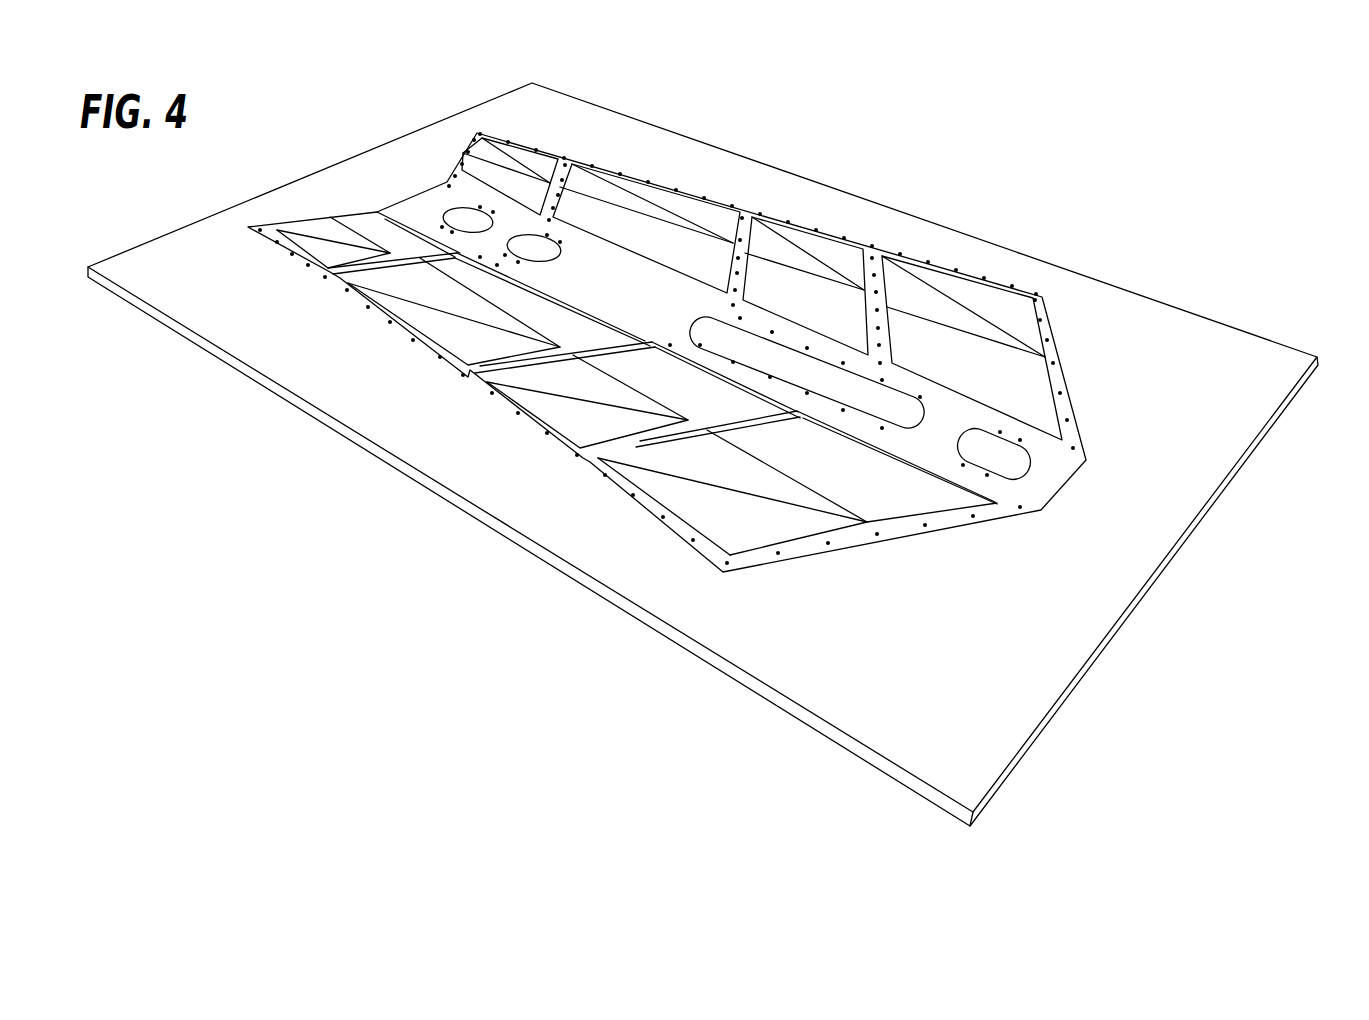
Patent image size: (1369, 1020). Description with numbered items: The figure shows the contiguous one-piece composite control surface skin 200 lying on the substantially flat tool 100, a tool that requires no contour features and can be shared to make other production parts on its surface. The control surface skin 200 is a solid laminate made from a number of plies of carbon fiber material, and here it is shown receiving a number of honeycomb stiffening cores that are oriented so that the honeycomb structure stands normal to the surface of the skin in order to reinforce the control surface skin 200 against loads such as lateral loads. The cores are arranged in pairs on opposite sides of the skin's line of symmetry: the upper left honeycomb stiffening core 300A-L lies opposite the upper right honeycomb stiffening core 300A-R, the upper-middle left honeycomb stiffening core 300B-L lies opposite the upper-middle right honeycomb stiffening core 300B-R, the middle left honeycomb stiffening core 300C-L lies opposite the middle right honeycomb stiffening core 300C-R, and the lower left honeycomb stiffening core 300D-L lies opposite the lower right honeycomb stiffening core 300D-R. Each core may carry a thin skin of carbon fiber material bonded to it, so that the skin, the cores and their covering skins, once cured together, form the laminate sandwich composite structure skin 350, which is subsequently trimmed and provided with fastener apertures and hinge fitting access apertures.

The substantially flat tool 100 is at (703, 454).
The contiguous one-piece composite control surface skin 200 is at (1053, 352).
The laminate sandwich composite structure skin 350 is at (730, 185).
The upper right honeycomb stiffening core 300A-R is at (497, 170).
The upper-middle right honeycomb stiffening core 300B-R is at (633, 220).
The middle right honeycomb stiffening core 300C-R is at (813, 272).
The lower right honeycomb stiffening core 300D-R is at (975, 343).
The upper left honeycomb stiffening core 300A-L is at (340, 235).
The upper-middle left honeycomb stiffening core 300B-L is at (457, 333).
The middle left honeycomb stiffening core 300C-L is at (592, 408).
The lower left honeycomb stiffening core 300D-L is at (738, 510).